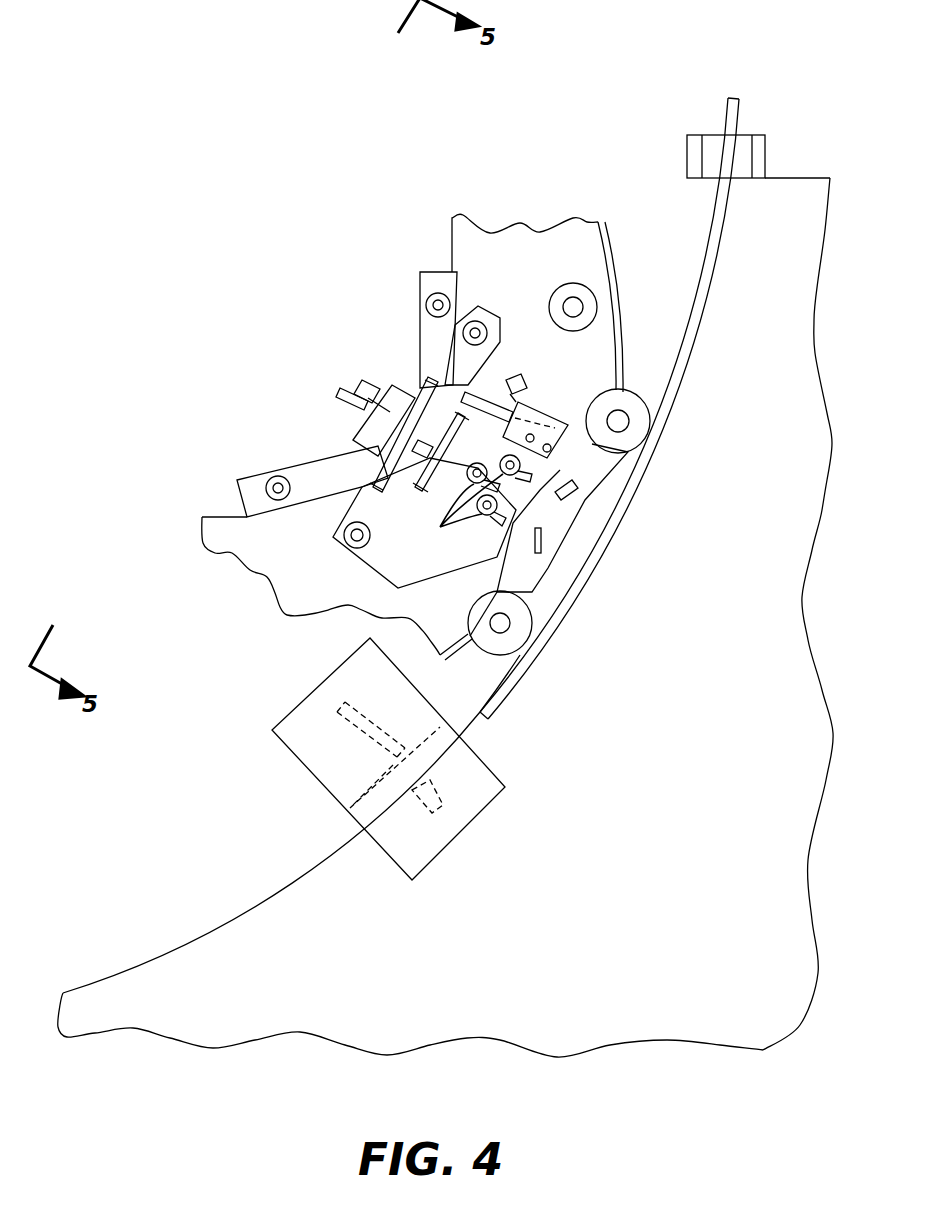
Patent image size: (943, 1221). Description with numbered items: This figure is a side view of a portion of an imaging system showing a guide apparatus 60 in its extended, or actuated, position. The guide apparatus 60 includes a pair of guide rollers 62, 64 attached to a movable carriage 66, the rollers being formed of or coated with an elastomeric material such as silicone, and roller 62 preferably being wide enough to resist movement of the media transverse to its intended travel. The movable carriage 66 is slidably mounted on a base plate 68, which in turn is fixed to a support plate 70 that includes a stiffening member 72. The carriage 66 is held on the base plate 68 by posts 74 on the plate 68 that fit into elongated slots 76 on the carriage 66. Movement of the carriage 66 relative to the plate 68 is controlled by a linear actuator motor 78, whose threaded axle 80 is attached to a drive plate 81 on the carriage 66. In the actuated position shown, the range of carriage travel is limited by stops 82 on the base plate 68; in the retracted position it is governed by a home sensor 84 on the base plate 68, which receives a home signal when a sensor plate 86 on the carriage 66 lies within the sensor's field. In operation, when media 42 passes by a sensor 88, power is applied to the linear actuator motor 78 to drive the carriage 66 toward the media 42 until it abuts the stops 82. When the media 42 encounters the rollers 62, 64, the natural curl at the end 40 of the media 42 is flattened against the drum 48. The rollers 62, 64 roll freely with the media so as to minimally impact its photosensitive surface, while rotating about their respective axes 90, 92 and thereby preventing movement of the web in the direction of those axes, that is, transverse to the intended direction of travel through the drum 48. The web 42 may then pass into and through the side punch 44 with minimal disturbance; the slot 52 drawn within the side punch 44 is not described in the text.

The end of the media 40 is at (477, 707).
The media 42 is at (713, 237).
The side punch 44 is at (310, 720).
The drum 48 is at (739, 594).
The slot 52 is at (345, 728).
The guide apparatus 60 is at (305, 300).
The guide roller 62 is at (525, 648).
The guide roller 64 is at (638, 430).
The movable carriage 66 is at (537, 512).
The base plate 68 is at (433, 350).
The support plate 70 is at (527, 276).
The stiffening member 72 is at (437, 278).
The posts 74 is at (455, 509).
The elongated slots 76 is at (495, 480).
The linear actuator motor 78 is at (380, 438).
The threaded axle 80 is at (345, 393).
The drive plate 81 is at (452, 436).
The stops 82 is at (540, 540).
The home sensor 84 is at (513, 385).
The sensor plate 86 is at (540, 410).
The sensor 88 is at (760, 155).
The axis 90 is at (497, 620).
The axis 92 is at (620, 418).